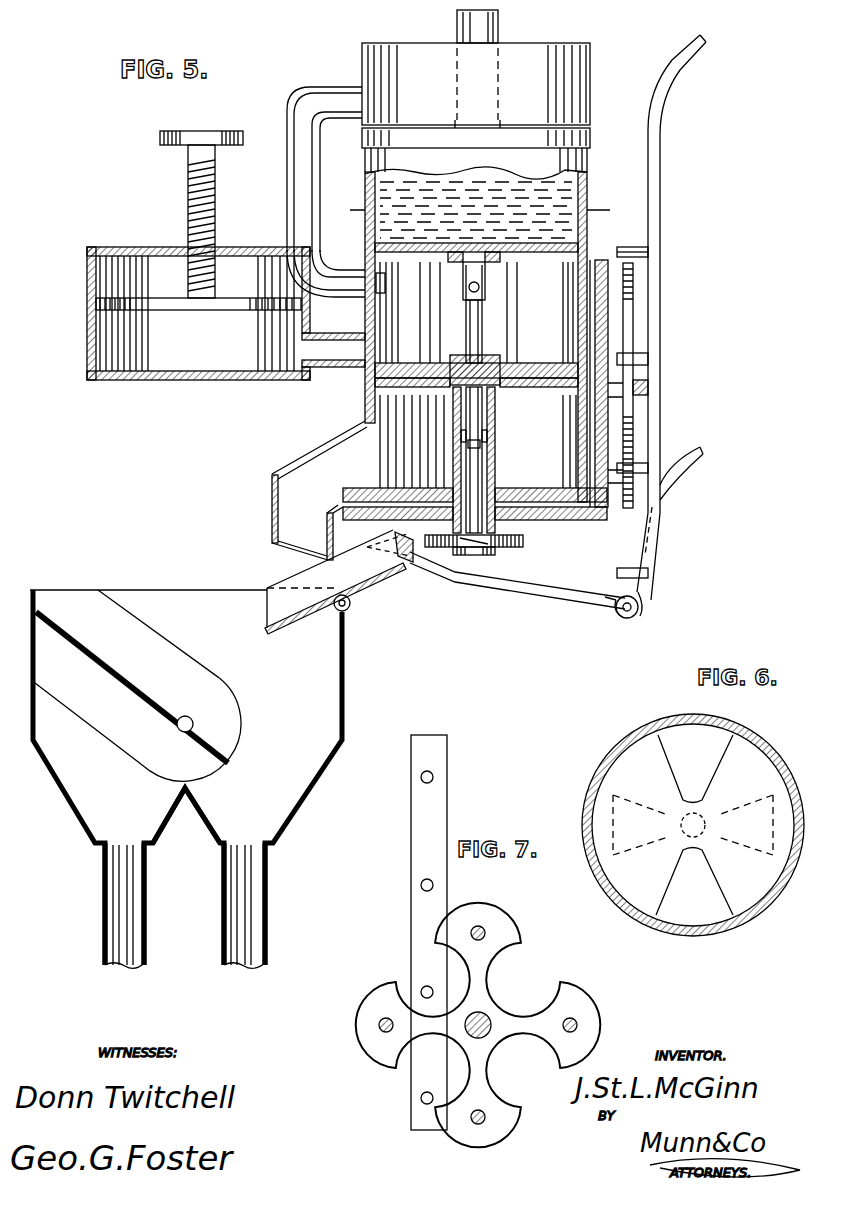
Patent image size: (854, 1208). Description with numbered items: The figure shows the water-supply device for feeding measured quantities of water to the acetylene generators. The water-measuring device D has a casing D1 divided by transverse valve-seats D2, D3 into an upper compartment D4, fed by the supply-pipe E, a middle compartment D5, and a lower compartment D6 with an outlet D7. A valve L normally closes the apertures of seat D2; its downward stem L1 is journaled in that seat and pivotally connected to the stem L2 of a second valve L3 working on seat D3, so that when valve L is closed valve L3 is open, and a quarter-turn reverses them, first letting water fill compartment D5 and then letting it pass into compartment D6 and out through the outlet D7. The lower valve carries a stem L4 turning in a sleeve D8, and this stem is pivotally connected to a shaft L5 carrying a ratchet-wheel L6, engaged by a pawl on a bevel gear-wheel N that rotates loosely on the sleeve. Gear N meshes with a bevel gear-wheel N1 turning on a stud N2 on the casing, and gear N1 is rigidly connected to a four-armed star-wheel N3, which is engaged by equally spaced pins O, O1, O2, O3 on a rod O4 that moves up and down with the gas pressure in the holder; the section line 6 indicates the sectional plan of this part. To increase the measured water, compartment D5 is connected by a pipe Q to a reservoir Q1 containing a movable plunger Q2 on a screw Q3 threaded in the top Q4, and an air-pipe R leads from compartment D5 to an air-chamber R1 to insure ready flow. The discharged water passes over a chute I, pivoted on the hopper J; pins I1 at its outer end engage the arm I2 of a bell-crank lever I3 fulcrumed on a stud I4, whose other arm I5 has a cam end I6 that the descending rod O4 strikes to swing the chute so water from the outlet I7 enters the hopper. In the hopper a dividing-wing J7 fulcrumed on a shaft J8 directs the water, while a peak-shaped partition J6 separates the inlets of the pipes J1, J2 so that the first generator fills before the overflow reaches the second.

In FIG. 5, the supply-pipe E is at (498, 26).
In FIG. 5, the air-chamber R1 is at (364, 70).
In FIG. 5, the air-pipe R is at (293, 207).
In FIG. 5, the casing D1 is at (588, 197).
In FIG. 6, the casing D1 is at (670, 712).
In FIG. 5, the section line 6 is at (479, 211).
In FIG. 5, the upper compartment D4 is at (372, 226).
In FIG. 5, the valve L is at (533, 243).
In FIG. 6, the valve L is at (637, 770).
In FIG. 5, the valve-seat D2 is at (542, 262).
In FIG. 6, the valve-seat D2 is at (613, 822).
In FIG. 5, the middle compartment D5 is at (466, 320).
In FIG. 5, the stem L1 is at (486, 275).
In FIG. 6, the stem L1 is at (693, 813).
In FIG. 5, the stem L2 is at (484, 329).
In FIG. 5, the valve L3 is at (545, 358).
In FIG. 5, the valve-seat D3 is at (548, 383).
In FIG. 5, the shaft L5 is at (488, 468).
In FIG. 5, the stem L4 is at (463, 397).
In FIG. 5, the sleeve D8 is at (462, 440).
In FIG. 5, the lower compartment D6 is at (551, 441).
In FIG. 5, the bevel gear-wheel N1 is at (602, 262).
In FIG. 5, the bevel gear-wheel N is at (590, 515).
In FIG. 5, the water-measuring device D is at (677, 274).
In FIG. 5, the pin O3 is at (648, 252).
In FIG. 7, the pin O3 is at (422, 780).
In FIG. 5, the rod O4 is at (656, 290).
In FIG. 7, the rod O4 is at (418, 823).
In FIG. 5, the star-wheel N3 is at (627, 413).
In FIG. 7, the star-wheel N3 is at (488, 968).
In FIG. 5, the pin O2 is at (640, 357).
In FIG. 7, the pin O2 is at (420, 885).
In FIG. 5, the stud N2 is at (642, 392).
In FIG. 7, the stud N2 is at (483, 1012).
In FIG. 5, the pin O1 is at (638, 467).
In FIG. 7, the pin O1 is at (423, 987).
In FIG. 5, the pin O is at (617, 575).
In FIG. 7, the pin O is at (422, 1097).
In FIG. 5, the cam end I6 is at (688, 467).
In FIG. 5, the arm I5 is at (659, 554).
In FIG. 5, the stud I4 is at (627, 618).
In FIG. 5, the arm I2 is at (533, 588).
In FIG. 5, the bell-crank lever I3 is at (594, 621).
In FIG. 5, the ratchet-wheel L6 is at (517, 550).
In FIG. 5, the outlet I7 is at (398, 536).
In FIG. 5, the pins I1 is at (412, 563).
In FIG. 5, the chute I is at (358, 570).
In FIG. 5, the outlet D7 is at (280, 507).
In FIG. 5, the reservoir Q1 is at (223, 361).
In FIG. 5, the plunger Q2 is at (212, 305).
In FIG. 5, the screw Q3 is at (195, 212).
In FIG. 5, the top Q4 is at (137, 228).
In FIG. 5, the pipe Q is at (347, 350).
In FIG. 5, the hopper J is at (345, 697).
In FIG. 5, the partition J6 is at (211, 822).
In FIG. 5, the pipe J2 is at (118, 890).
In FIG. 5, the pipe J1 is at (261, 920).
In FIG. 5, the dividing-wing J7 is at (163, 706).
In FIG. 5, the shaft J8 is at (191, 722).